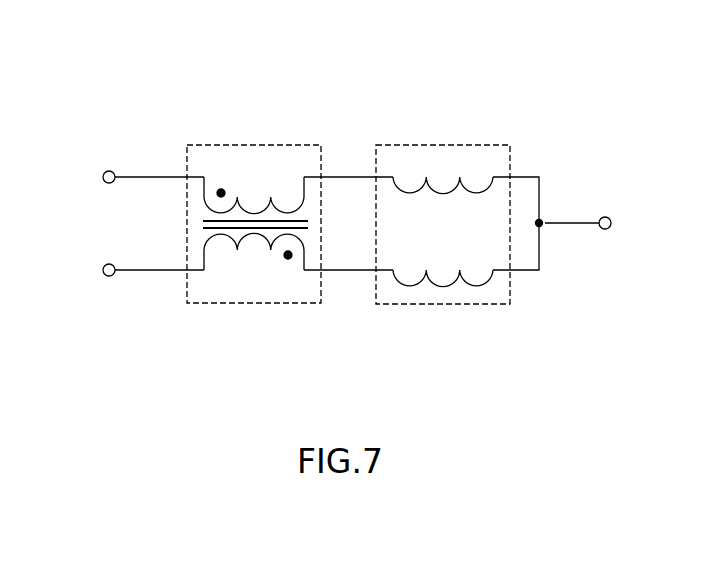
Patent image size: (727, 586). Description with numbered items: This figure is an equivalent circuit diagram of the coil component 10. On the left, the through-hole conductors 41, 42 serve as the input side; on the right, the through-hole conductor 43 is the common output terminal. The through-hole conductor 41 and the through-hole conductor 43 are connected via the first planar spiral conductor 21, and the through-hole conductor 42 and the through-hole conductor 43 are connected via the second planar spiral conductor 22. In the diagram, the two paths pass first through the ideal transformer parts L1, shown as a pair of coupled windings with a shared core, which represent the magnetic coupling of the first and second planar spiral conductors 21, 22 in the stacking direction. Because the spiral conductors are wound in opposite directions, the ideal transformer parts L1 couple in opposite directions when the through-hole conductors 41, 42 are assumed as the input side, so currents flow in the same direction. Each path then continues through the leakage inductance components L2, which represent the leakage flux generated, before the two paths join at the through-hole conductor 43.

The coil component 10 is at (378, 92).
The first planar spiral conductor 21 is at (256, 210).
The second planar spiral conductor 22 is at (255, 238).
The through-hole conductor 41 is at (102, 173).
The through-hole conductor 42 is at (102, 266).
The through-hole conductor 43 is at (609, 216).
The ideal transformer parts L1 is at (258, 145).
The leakage inductance components L2 is at (448, 145).